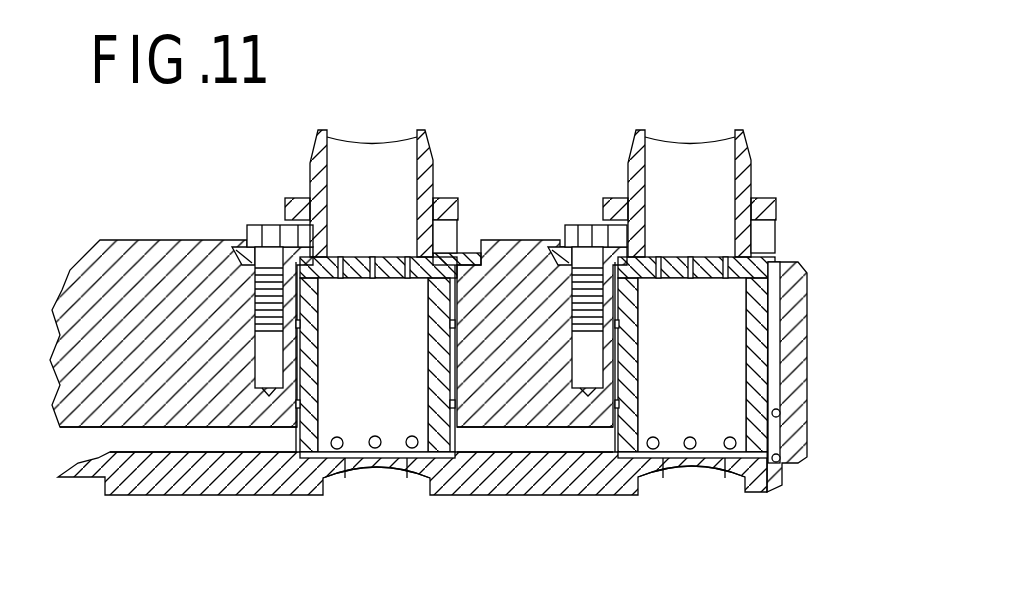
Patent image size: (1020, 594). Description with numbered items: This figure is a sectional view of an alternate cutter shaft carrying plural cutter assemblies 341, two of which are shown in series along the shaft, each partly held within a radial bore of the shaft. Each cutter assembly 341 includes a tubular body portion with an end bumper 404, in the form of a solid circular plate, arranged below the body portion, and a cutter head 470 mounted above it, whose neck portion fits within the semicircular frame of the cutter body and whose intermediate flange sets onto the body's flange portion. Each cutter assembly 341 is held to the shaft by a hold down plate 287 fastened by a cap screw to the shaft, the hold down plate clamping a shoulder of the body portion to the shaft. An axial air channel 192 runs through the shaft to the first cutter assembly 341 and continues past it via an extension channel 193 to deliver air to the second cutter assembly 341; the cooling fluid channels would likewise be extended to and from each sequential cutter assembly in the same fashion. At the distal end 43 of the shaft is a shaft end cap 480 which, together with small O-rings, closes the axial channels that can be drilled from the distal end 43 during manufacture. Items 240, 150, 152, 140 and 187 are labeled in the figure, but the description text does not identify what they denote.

The cutter assembly 341 is at (357, 128).
The cutter head 470 is at (432, 130).
The manifold body 240 is at (160, 238).
The hold down plate 287 is at (247, 226).
The seal 150 is at (348, 257).
The seal ring 152 is at (406, 257).
The spacer 140 is at (460, 262).
The bolt 187 is at (565, 226).
The distal end 43 is at (810, 265).
The air channel 192 is at (193, 440).
The extension channel 193 is at (570, 443).
The end bumper 404 is at (363, 458).
The shaft end cap 480 is at (808, 443).